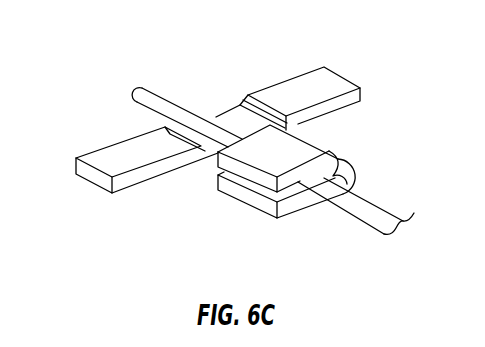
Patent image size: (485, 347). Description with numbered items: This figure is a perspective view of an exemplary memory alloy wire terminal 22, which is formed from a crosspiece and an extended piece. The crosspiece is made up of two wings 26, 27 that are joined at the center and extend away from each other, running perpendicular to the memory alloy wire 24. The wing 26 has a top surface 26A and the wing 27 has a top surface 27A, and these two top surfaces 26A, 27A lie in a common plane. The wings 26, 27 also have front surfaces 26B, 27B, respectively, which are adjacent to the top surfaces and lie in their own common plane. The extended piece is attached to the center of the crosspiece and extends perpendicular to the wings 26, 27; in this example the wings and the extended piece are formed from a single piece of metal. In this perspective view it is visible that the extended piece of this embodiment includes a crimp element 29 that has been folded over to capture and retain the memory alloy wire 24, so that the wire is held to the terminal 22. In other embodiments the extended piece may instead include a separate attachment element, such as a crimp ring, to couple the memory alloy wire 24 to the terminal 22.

The memory alloy wire terminal 22 is at (207, 49).
The memory alloy wire 24 is at (146, 92).
The wing 26 is at (78, 194).
The top surface 26A is at (110, 152).
The front surface 26B is at (131, 183).
The wing 27 is at (350, 60).
The top surface 27A is at (300, 84).
The front surface 27B is at (330, 110).
The crimp element 29 is at (276, 168).